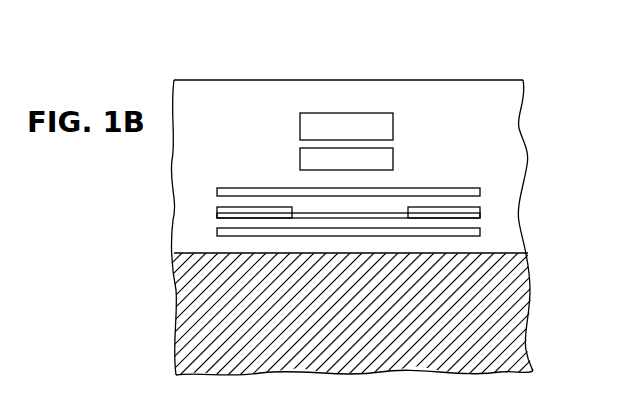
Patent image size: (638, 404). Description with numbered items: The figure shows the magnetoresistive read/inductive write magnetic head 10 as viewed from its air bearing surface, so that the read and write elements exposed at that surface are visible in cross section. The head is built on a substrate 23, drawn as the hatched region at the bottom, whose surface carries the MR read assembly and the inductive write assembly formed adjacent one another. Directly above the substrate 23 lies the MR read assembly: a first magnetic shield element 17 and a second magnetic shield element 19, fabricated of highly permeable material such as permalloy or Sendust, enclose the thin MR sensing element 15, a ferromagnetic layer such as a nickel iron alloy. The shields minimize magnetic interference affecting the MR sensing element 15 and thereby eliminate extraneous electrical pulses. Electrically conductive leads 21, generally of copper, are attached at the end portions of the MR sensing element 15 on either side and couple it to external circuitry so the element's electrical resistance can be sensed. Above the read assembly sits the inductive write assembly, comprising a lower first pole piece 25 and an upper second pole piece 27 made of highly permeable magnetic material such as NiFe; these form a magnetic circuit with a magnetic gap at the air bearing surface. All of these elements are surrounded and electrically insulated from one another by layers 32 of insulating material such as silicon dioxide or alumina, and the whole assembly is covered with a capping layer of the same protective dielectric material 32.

The magnetic head 10 is at (475, 62).
The layers of insulating material 32 is at (246, 134).
The second pole piece 27 is at (393, 128).
The first pole piece 25 is at (393, 160).
The second magnetic shield element 19 is at (480, 190).
The electrically conductive leads 21 is at (480, 209).
The MR sensing element 15 is at (467, 218).
The first magnetic shield element 17 is at (480, 233).
The substrate 23 is at (181, 315).